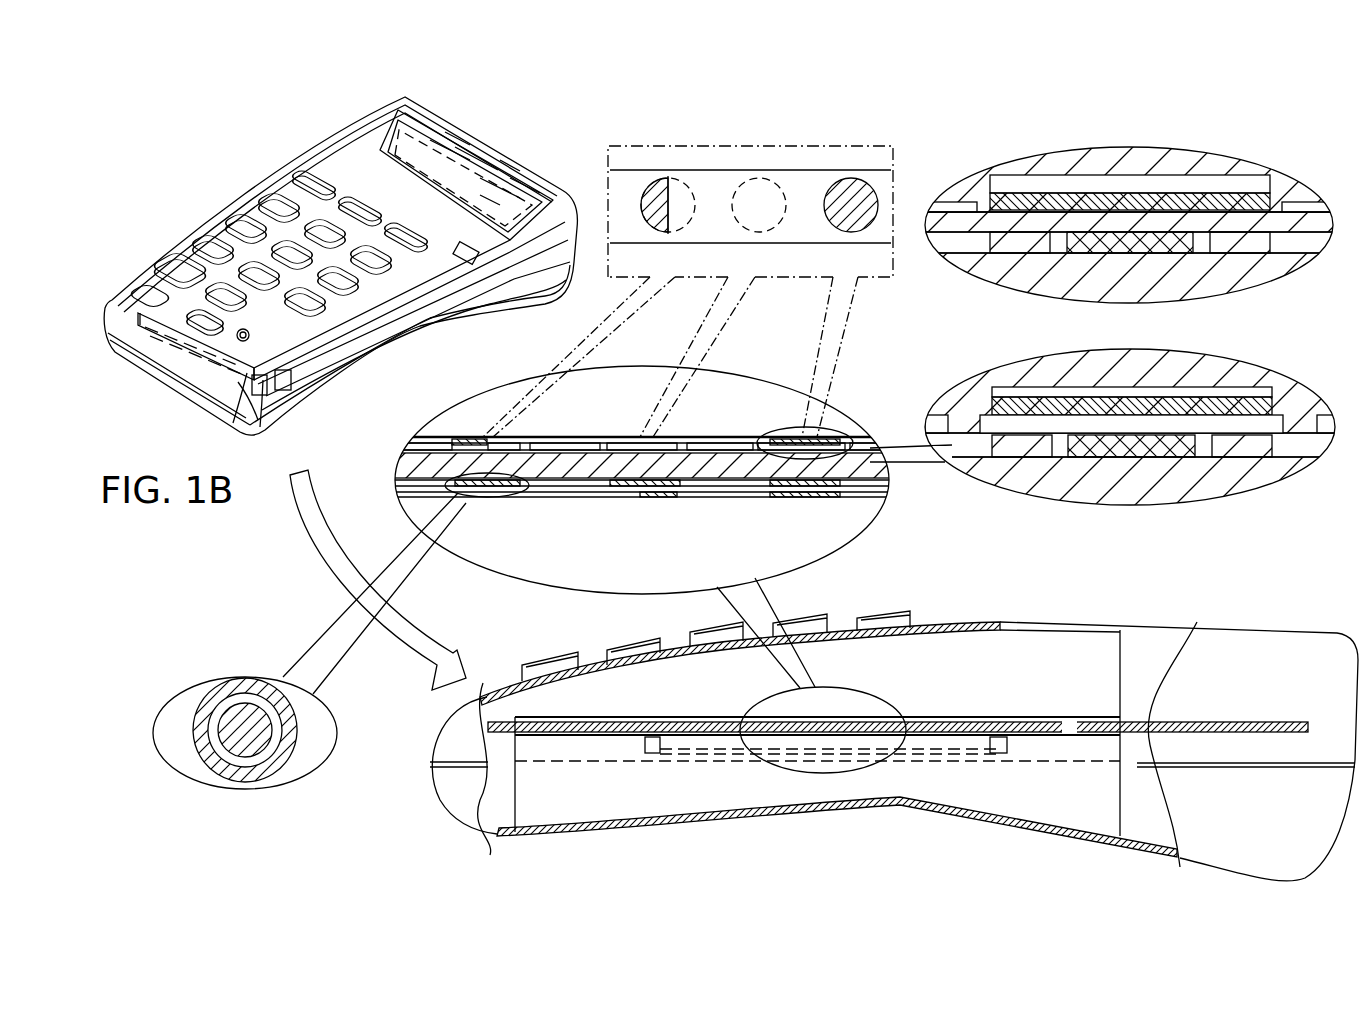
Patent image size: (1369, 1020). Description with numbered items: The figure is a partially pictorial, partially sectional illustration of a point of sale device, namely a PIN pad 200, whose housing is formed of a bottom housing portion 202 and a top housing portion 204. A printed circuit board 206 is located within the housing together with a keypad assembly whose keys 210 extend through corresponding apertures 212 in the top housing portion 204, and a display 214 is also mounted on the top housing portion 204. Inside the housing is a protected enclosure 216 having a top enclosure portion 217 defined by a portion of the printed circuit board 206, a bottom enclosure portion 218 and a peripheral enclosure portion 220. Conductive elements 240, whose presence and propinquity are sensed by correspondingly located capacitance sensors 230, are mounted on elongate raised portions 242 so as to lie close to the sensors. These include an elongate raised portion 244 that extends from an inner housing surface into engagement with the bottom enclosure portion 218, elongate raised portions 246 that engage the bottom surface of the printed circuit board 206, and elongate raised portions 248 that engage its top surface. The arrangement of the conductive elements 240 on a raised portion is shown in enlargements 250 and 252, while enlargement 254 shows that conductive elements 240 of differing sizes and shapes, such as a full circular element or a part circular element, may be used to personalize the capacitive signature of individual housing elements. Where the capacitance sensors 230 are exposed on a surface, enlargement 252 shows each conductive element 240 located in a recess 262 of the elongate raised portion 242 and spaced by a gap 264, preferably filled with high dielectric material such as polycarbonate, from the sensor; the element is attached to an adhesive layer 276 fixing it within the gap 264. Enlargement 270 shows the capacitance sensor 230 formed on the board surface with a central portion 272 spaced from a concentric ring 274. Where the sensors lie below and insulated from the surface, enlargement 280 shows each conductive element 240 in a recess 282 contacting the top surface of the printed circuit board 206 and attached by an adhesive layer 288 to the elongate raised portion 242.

The PIN pad 200 is at (250, 170).
The bottom housing portion 202 is at (458, 322).
The top housing portion 204 is at (307, 163).
The printed circuit board 206 is at (257, 413).
The keys 210 is at (210, 237).
The apertures 212 is at (253, 203).
The display 214 is at (467, 181).
The protected enclosure 216 is at (297, 342).
The top enclosure portion 217 is at (340, 318).
The bottom enclosure portion 218 is at (363, 334).
The peripheral enclosure portion 220 is at (640, 760).
The capacitance sensors 230 is at (610, 457).
The conductive elements 240 is at (653, 223).
The elongate raised portions 242 is at (1160, 165).
The elongate raised portion 244 is at (575, 753).
The elongate raised portions 246 is at (390, 318).
The elongate raised portions 248 is at (140, 287).
The enlargement 250 is at (557, 589).
The enlargement 252 is at (1046, 500).
The enlargement 254 is at (765, 146).
The recess 262 is at (1210, 388).
The gap 264 is at (1280, 420).
The enlargement 270 is at (185, 683).
The central portion 272 is at (265, 738).
The concentric ring 274 is at (292, 712).
The adhesive layer 276 is at (1010, 388).
The enlargement 280 is at (1250, 160).
The recess 282 is at (1128, 182).
The adhesive layer 288 is at (1010, 178).